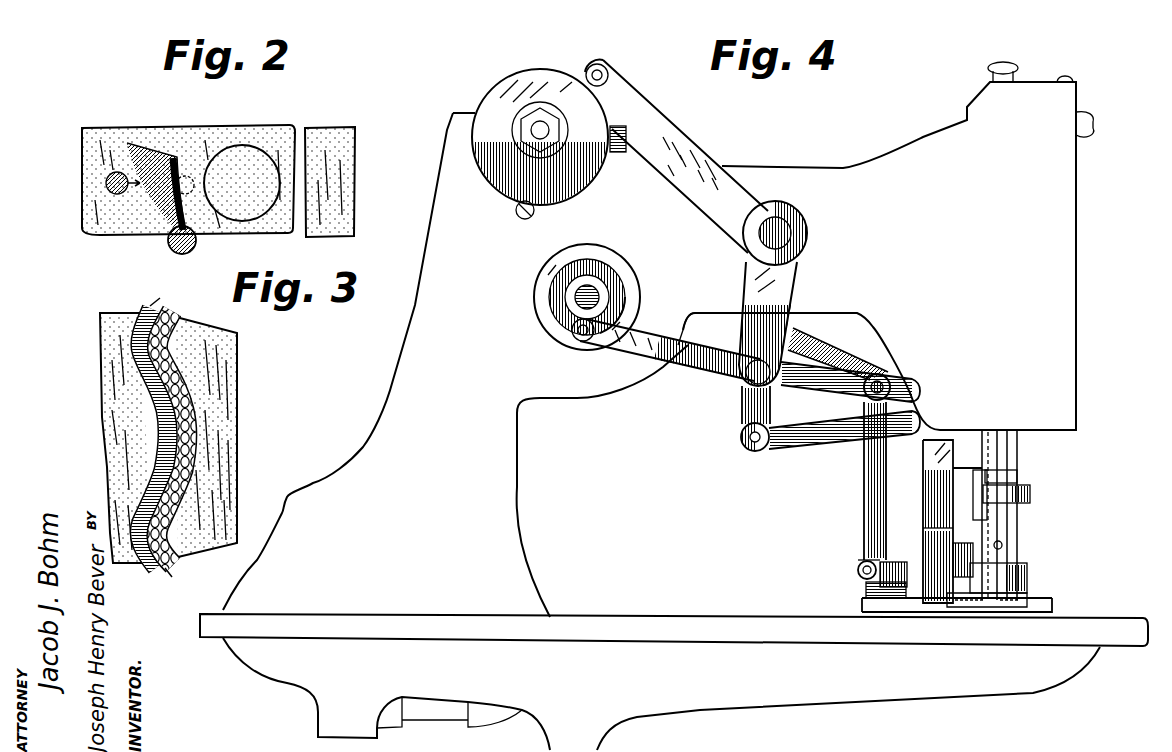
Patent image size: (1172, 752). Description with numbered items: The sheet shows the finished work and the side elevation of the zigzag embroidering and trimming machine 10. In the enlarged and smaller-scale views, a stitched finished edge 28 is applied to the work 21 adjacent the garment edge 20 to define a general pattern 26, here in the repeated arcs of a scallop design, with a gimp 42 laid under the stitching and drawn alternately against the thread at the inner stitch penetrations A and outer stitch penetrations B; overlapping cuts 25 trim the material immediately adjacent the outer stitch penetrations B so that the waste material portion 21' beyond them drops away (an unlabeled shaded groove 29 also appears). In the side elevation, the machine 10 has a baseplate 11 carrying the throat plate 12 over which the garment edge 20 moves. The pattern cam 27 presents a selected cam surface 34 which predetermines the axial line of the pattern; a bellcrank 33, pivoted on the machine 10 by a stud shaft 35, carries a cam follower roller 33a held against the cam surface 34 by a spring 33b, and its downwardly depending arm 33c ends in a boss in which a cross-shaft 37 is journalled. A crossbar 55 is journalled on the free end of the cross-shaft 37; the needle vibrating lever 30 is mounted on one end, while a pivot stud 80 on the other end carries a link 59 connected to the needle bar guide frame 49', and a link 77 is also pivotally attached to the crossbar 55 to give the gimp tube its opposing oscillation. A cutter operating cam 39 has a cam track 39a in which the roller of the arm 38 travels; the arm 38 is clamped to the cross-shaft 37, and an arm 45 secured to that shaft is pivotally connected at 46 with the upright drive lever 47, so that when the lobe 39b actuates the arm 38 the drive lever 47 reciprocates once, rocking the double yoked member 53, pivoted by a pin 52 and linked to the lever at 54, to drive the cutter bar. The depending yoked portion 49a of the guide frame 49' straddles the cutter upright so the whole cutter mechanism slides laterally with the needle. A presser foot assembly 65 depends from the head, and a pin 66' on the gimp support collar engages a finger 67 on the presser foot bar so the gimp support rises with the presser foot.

In FIG. 4, the machine 10 is at (513, 545).
In FIG. 4, the baseplate 11 is at (690, 614).
In FIG. 4, the throat plate 12 is at (1052, 617).
In FIG. 2, the garment edge 20 is at (357, 196).
In FIG. 3, the garment edge 20 is at (237, 418).
In FIG. 2, the work 21 is at (168, 180).
In FIG. 3, the work 21 is at (99, 438).
In FIG. 3, the waste material portion 21' is at (231, 437).
In FIG. 2, the overlapping cuts 25 is at (256, 152).
In FIG. 3, the overlapping cuts 25 is at (176, 316).
In FIG. 3, the general pattern 26 is at (155, 415).
In FIG. 4, the pattern cam 27 is at (535, 88).
In FIG. 3, the stitched finished edge 28 is at (156, 457).
In FIG. 2, the shaded groove 29 is at (160, 155).
In FIG. 4, the needle vibrating lever 30 is at (703, 330).
In FIG. 4, the bellcrank 33 is at (688, 148).
In FIG. 4, the cam follower roller 33a is at (600, 66).
In FIG. 4, the spring 33b is at (618, 150).
In FIG. 4, the downwardly depending arm 33c is at (784, 294).
In FIG. 4, the cam surface 34 is at (588, 183).
In FIG. 4, the stud shaft 35 is at (808, 238).
In FIG. 4, the cross-shaft 37 is at (745, 382).
In FIG. 4, the arm 38 is at (655, 345).
In FIG. 4, the cutter operating cam 39 is at (565, 292).
In FIG. 4, the cam track 39a is at (562, 322).
In FIG. 4, the lobe 39b is at (612, 286).
In FIG. 2, the gimp 42 is at (170, 243).
In FIG. 4, the arm 45 is at (830, 390).
In FIG. 4, the pivotal connection 46 is at (892, 387).
In FIG. 4, the drive lever 47 is at (866, 516).
In FIG. 4, the needle bar guide frame 49' is at (933, 521).
In FIG. 4, the depending yoked portion 49a is at (935, 541).
In FIG. 4, the pin 52 is at (877, 584).
In FIG. 4, the double yoked member 53 is at (862, 560).
In FIG. 4, the pivotal connection 54 is at (857, 573).
In FIG. 4, the crossbar 55 is at (742, 418).
In FIG. 4, the link 59 is at (797, 452).
In FIG. 4, the presser foot assembly 65 is at (1023, 574).
In FIG. 4, the pin 66' is at (1030, 515).
In FIG. 4, the finger 67 is at (1032, 498).
In FIG. 4, the link 77 is at (830, 356).
In FIG. 4, the pivot stud 80 is at (742, 444).
In FIG. 2, the inner stitch penetrations A is at (106, 182).
In FIG. 2, the outer stitch penetrations B is at (187, 176).